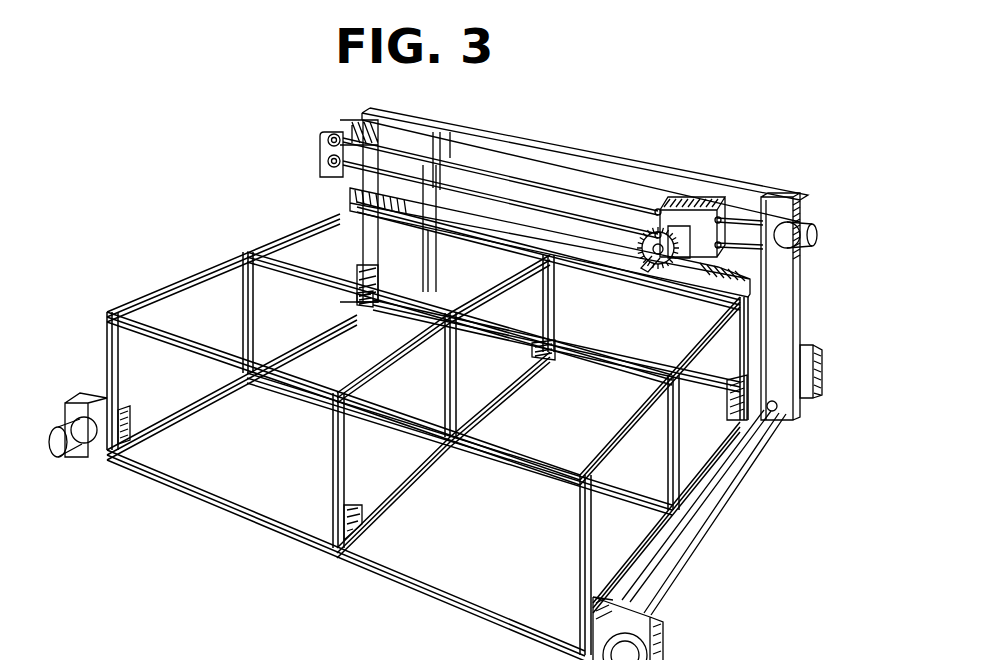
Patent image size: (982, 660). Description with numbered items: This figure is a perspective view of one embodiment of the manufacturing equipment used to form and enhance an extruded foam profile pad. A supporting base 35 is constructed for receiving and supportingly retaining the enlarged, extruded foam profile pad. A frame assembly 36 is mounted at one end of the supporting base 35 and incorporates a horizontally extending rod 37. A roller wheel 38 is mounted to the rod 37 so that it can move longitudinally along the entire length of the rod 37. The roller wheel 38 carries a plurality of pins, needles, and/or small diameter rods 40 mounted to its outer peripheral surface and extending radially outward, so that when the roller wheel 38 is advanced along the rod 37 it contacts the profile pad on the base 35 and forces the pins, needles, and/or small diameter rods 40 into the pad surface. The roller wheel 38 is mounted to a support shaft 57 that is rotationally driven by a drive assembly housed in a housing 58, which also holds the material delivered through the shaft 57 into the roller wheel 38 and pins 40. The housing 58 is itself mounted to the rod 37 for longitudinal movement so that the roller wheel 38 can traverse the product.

The supporting base 35 is at (250, 513).
The frame assembly 36 is at (780, 313).
The horizontally extending rod 37 is at (484, 192).
The roller wheel 38 is at (655, 256).
The pins, needles, and/or small diameter rods 40 is at (688, 268).
The support shaft 57 is at (650, 258).
The housing 58 is at (698, 202).